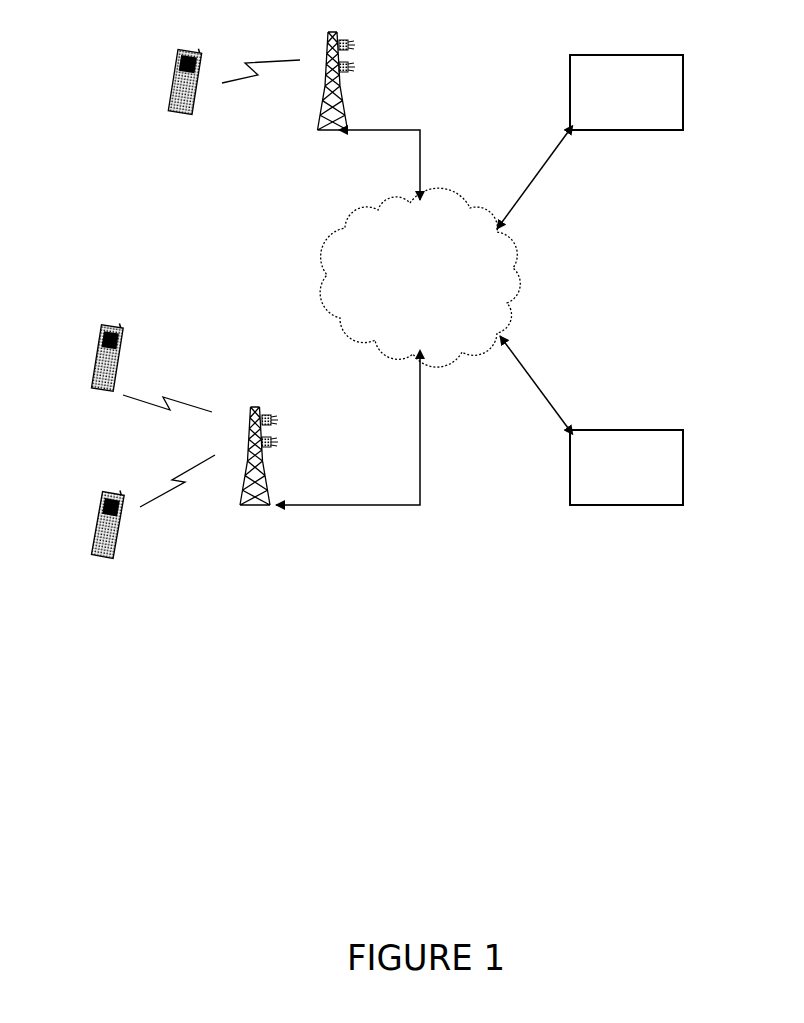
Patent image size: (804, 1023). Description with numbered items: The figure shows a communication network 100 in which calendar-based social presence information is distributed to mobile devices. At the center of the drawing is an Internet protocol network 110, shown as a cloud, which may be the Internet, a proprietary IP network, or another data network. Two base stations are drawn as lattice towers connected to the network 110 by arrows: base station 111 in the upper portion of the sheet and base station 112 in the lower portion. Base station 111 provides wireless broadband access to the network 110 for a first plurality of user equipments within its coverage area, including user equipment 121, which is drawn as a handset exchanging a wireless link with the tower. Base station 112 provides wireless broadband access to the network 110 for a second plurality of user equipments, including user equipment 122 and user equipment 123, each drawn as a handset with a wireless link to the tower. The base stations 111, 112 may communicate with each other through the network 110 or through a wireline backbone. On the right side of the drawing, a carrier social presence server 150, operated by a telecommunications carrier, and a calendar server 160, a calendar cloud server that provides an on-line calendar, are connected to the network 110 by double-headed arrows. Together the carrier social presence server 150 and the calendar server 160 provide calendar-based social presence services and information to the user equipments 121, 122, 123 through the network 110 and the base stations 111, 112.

The communication network 100 is at (118, 749).
The Internet protocol network 110 is at (513, 283).
The base station 111 is at (336, 30).
The base station 112 is at (255, 405).
The user equipment 121 is at (190, 117).
The user equipment 122 is at (92, 383).
The user equipment 123 is at (113, 553).
The carrier social presence server 150 is at (626, 92).
The calendar server 160 is at (626, 467).